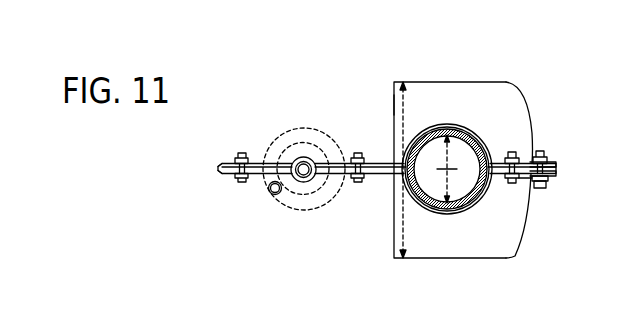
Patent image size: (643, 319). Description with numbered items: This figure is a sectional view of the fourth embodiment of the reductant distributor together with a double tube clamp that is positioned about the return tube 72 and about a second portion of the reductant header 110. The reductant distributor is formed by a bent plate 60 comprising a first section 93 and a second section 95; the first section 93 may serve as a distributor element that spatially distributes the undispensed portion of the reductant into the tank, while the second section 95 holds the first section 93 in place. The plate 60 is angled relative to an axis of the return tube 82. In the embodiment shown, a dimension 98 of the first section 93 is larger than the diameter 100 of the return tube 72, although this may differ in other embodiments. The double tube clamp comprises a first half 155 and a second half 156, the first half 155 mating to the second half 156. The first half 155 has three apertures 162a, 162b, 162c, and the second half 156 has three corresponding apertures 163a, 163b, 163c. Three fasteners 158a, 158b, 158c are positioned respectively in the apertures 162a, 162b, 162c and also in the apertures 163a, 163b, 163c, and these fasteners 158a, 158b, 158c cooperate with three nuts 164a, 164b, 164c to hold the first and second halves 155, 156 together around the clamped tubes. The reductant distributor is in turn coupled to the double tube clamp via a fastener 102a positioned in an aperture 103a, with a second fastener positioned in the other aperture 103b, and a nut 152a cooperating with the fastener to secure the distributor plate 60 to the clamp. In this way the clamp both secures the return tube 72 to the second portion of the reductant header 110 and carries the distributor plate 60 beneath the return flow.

The plate 60 is at (401, 211).
The return tube 72 is at (447, 129).
The return tube 82 is at (474, 172).
The first section 93 is at (443, 250).
The second section 95 is at (551, 180).
The dimension 98 is at (394, 103).
The diameter 100 is at (444, 135).
The fastener 102a is at (541, 184).
The aperture 103a is at (557, 172).
The aperture 103b is at (548, 162).
The reductant header 110 is at (387, 318).
The nut 152a is at (549, 158).
The first half 155 is at (278, 163).
The second half 156 is at (281, 174).
The fastener 158a is at (238, 181).
The fastener 158b is at (352, 181).
The fastener 158c is at (522, 183).
The aperture 162a is at (219, 164).
The aperture 162b is at (335, 164).
The aperture 162c is at (525, 160).
The aperture 163a is at (220, 172).
The aperture 163b is at (330, 174).
The aperture 163c is at (513, 183).
The nut 164a is at (235, 160).
The nut 164b is at (350, 160).
The nut 164c is at (513, 152).